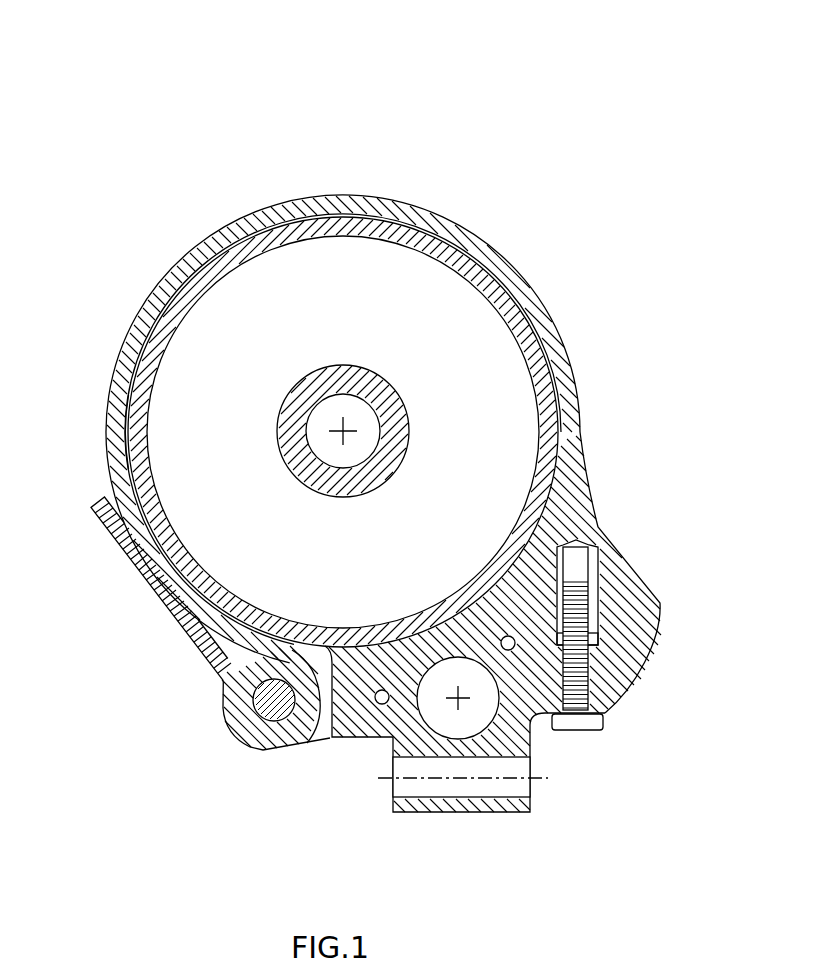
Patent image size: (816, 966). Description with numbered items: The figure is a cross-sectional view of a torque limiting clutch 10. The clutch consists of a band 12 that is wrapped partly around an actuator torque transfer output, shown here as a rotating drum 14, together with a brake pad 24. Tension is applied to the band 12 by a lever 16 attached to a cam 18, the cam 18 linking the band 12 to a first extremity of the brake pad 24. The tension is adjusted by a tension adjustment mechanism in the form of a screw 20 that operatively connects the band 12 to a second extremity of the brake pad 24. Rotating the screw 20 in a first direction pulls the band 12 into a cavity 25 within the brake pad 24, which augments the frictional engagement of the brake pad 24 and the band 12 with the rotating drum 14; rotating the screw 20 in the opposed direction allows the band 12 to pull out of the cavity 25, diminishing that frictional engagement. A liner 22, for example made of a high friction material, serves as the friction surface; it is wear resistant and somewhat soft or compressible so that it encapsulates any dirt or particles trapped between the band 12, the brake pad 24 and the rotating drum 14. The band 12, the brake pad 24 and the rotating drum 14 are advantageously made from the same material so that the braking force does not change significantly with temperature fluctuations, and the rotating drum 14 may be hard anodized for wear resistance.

The torque limiting clutch 10 is at (375, 415).
The band 12 is at (166, 282).
The rotating drum 14 is at (262, 248).
The lever 16 is at (166, 597).
The cam 18 is at (275, 722).
The screw 20 is at (582, 730).
The liner 22 is at (123, 413).
The brake pad 24 is at (393, 727).
The cavity 25 is at (604, 638).